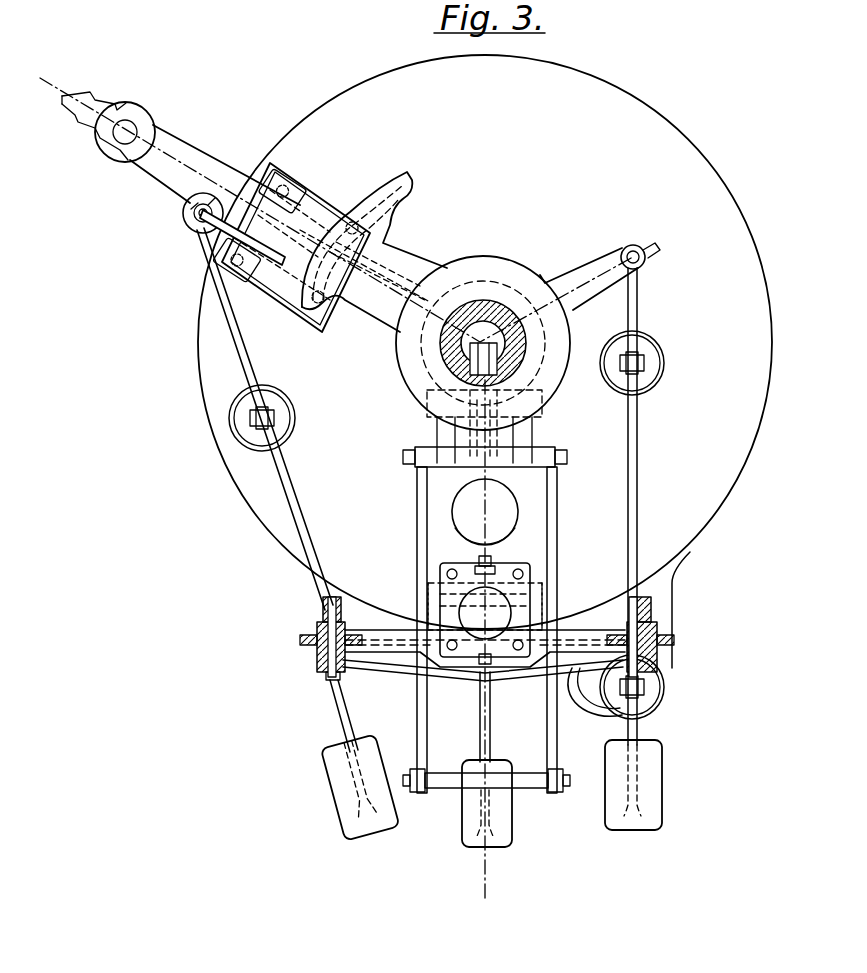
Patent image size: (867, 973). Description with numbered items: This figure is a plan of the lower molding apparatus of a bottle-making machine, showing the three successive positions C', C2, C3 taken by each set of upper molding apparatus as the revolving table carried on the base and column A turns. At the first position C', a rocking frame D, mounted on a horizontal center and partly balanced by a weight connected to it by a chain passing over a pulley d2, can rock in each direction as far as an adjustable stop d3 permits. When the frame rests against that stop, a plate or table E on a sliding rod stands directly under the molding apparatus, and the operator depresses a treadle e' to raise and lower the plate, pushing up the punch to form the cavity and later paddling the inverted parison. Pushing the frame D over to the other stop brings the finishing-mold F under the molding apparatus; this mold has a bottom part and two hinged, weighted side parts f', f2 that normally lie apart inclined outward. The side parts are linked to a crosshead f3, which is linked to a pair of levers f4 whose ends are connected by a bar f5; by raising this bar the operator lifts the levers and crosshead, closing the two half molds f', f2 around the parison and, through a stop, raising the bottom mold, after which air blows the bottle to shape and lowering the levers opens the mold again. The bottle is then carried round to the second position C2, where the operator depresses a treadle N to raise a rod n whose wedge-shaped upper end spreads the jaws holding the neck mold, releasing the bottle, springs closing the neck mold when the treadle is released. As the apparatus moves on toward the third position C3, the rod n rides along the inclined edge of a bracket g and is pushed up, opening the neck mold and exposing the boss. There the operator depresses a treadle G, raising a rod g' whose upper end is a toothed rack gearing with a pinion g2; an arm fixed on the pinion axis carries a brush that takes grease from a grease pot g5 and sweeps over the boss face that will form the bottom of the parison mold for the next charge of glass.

The base and column A is at (485, 342).
The third position of the molding apparatus C3 is at (335, 200).
The grease pot g5 is at (138, 129).
The rod g' is at (186, 224).
The pinion g2 is at (280, 265).
The bracket g is at (374, 252).
The second position of the molding apparatus C2 is at (660, 246).
The rod n is at (648, 268).
The pulley d2 is at (492, 432).
The adjustable stop d3 is at (618, 715).
The levers f4 is at (487, 620).
The plate or table E is at (485, 512).
The finishing-mold F is at (485, 610).
The side part of finishing-mold f' is at (441, 605).
The side part of finishing-mold f2 is at (527, 604).
The rocking frame D is at (517, 610).
The crosshead f3 is at (480, 684).
The treadle G is at (298, 534).
The treadle N is at (643, 713).
The first position of the molding apparatus C' is at (496, 640).
The bar f5 is at (520, 762).
The treadle e' is at (487, 803).